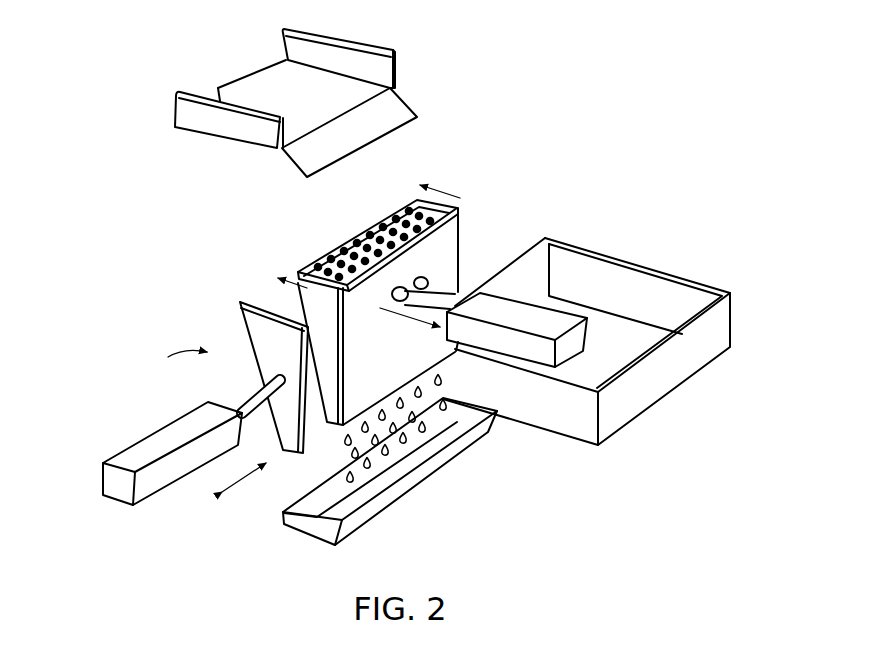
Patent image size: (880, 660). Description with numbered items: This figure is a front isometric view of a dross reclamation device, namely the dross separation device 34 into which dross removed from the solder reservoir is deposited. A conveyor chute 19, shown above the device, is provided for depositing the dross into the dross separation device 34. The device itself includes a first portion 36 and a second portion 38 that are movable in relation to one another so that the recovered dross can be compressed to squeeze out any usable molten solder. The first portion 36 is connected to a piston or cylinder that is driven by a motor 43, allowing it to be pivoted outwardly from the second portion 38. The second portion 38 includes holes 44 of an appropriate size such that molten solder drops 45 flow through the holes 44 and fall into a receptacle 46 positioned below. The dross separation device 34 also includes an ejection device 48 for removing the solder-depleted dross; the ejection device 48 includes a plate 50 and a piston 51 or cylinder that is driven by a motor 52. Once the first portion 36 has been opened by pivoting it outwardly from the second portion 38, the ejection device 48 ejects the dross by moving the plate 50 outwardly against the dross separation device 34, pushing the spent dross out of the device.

The conveyor chute 19 is at (405, 98).
The dross separation device 34 is at (582, 207).
The first portion 36 is at (463, 243).
The second portion 38 is at (390, 217).
The motor 43 is at (568, 360).
The holes 44 is at (357, 233).
The molten solder drops 45 is at (343, 446).
The receptacle 46 is at (382, 513).
The ejection device 48 is at (198, 421).
The plate 50 is at (240, 318).
The piston 51 is at (253, 386).
The motor 52 is at (152, 430).